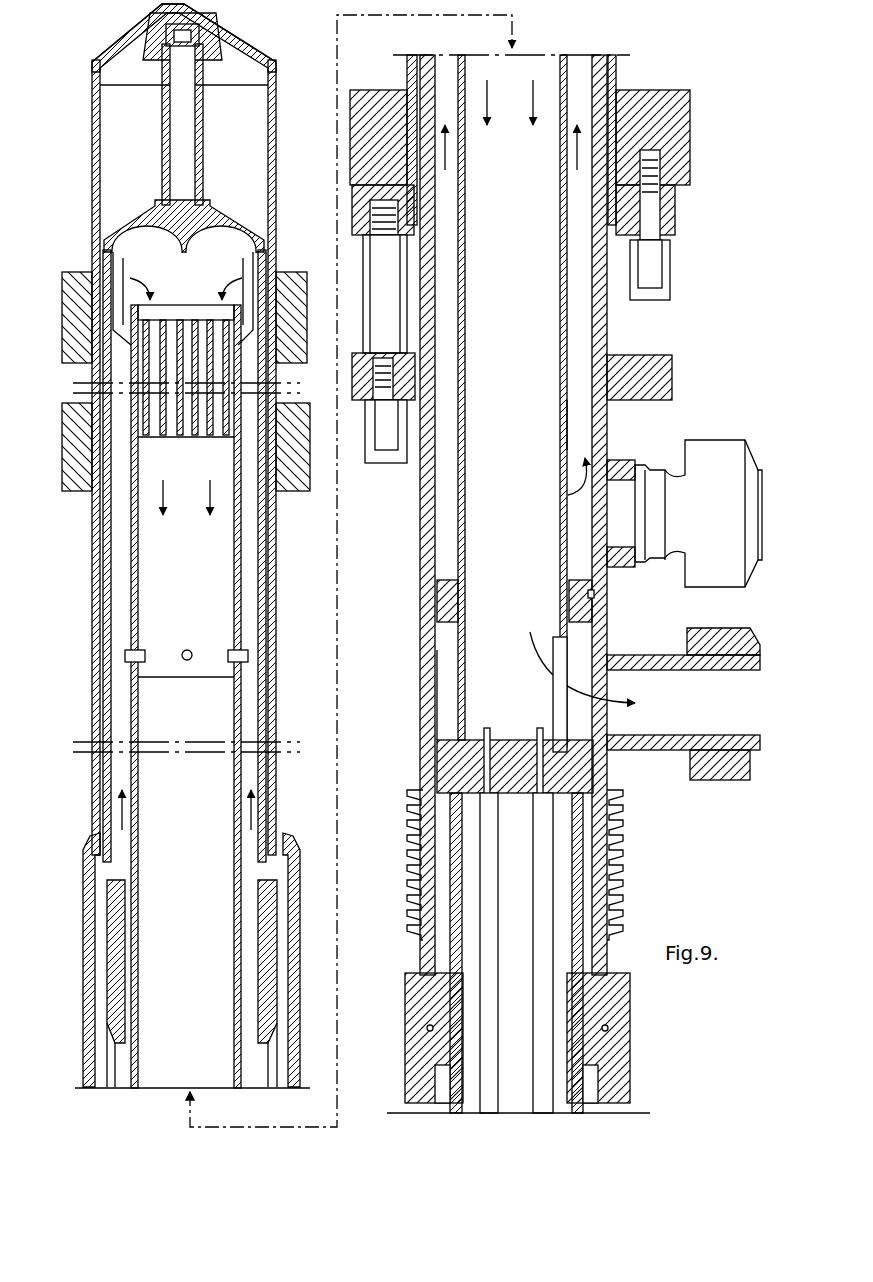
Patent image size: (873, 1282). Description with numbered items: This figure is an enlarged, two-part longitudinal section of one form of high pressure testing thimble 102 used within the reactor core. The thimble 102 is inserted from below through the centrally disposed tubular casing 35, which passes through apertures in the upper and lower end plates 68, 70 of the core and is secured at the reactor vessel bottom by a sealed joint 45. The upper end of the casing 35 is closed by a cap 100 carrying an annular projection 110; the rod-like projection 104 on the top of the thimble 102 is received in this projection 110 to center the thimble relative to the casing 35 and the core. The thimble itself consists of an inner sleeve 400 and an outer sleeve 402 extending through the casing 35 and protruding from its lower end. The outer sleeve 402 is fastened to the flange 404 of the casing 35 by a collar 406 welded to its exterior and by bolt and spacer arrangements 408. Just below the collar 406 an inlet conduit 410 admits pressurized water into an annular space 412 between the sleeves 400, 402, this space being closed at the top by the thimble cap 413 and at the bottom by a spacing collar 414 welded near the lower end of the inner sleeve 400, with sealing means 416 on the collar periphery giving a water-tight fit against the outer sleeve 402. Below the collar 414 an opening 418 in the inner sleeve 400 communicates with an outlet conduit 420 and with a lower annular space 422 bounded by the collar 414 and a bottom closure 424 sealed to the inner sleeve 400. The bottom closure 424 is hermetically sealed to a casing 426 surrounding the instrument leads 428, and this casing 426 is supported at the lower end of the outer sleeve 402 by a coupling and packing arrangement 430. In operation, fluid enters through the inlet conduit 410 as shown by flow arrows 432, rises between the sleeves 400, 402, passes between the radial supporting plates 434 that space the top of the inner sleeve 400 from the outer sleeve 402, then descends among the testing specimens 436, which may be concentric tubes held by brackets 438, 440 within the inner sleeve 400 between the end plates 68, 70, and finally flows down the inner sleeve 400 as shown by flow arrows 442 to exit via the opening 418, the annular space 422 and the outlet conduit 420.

The tubular casing 35 is at (276, 170).
The sealed joint 45 is at (694, 106).
The upper end plate 68 is at (62, 326).
The lower end plate 70 is at (62, 464).
The cap 100 is at (245, 45).
The high pressure testing thimble 102 is at (272, 272).
The rod-like projection 104 is at (203, 120).
The annular projection 110 is at (200, 50).
The inner sleeve 400 is at (138, 560).
The outer sleeve 402 is at (112, 632).
The flange 404 is at (670, 235).
The collar 406 is at (650, 356).
The bolt and spacer arrangement 408 is at (365, 340).
The inlet conduit 410 is at (662, 480).
The annular space 412 is at (578, 425).
The cap 413 is at (215, 222).
The spacing collar 414 is at (575, 605).
The sealing means 416 is at (598, 596).
The opening 418 is at (553, 712).
The outlet conduit 420 is at (665, 750).
The annular space 422 is at (437, 700).
The bottom closure 424 is at (455, 770).
The casing 426 is at (560, 888).
The leads 428 is at (520, 944).
The coupling and packing arrangement 430 is at (630, 1035).
The flow arrows 432 is at (125, 818).
The radial supporting plates 434 is at (122, 268).
The testing specimens 436 is at (150, 435).
The bracket 438 is at (192, 316).
The bracket 440 is at (215, 435).
The flow arrows 442 is at (158, 287).